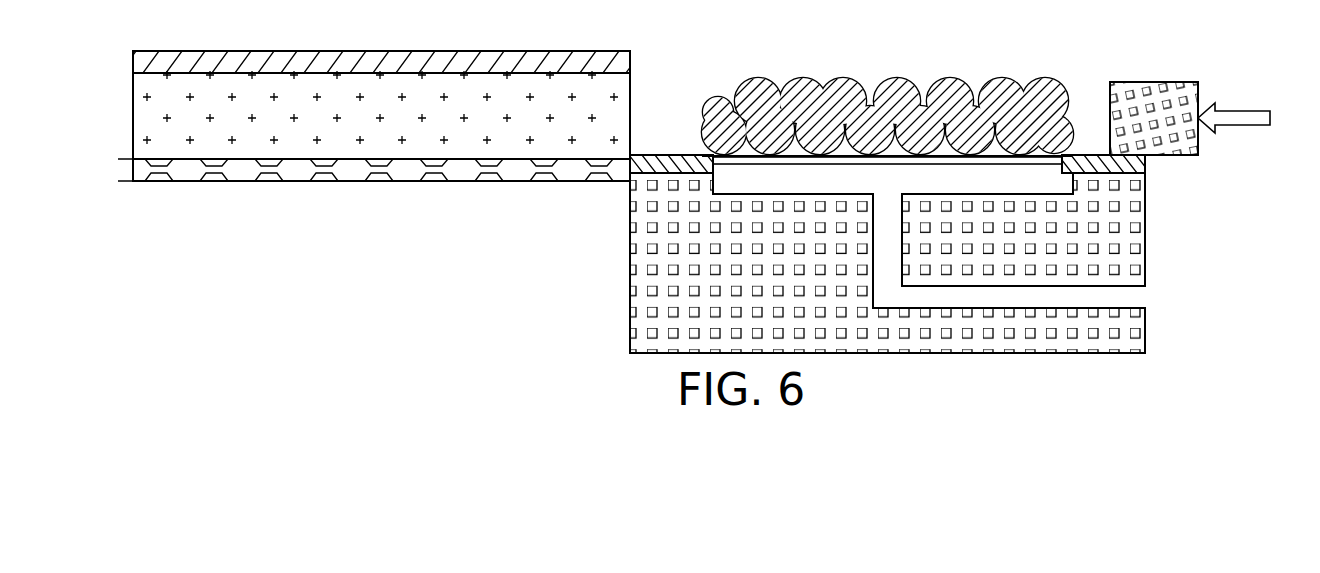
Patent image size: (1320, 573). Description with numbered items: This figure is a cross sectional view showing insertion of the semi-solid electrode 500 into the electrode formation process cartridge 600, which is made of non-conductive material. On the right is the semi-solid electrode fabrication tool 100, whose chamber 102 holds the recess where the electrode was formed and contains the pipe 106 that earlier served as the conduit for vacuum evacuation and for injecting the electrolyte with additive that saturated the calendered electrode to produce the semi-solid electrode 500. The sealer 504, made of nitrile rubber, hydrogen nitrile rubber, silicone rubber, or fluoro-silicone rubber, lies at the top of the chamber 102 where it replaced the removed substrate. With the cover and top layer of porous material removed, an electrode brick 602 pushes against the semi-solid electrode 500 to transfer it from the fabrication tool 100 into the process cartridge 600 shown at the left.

The semi-solid electrode fabrication tool 100 is at (910, 188).
The chamber 102 is at (630, 312).
The pipe 106 is at (1148, 297).
The semi-solid electrode 500 is at (731, 105).
The sealer 504 is at (1147, 163).
The electrode formation process cartridge 600 is at (183, 183).
The electrode brick 602 is at (1200, 86).